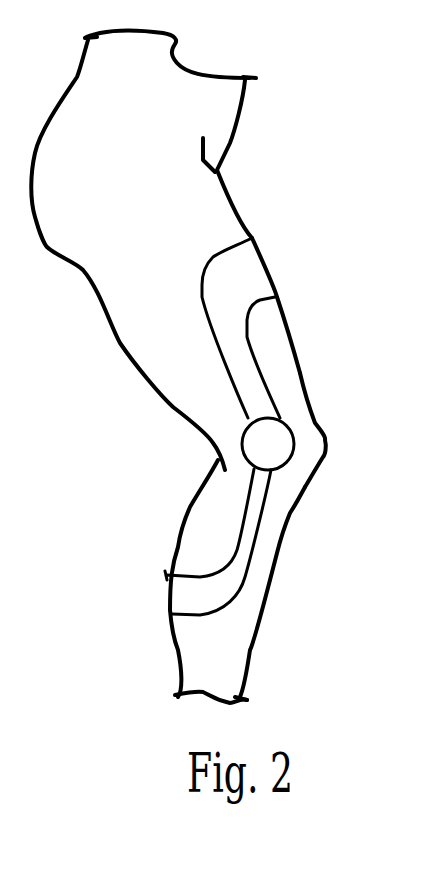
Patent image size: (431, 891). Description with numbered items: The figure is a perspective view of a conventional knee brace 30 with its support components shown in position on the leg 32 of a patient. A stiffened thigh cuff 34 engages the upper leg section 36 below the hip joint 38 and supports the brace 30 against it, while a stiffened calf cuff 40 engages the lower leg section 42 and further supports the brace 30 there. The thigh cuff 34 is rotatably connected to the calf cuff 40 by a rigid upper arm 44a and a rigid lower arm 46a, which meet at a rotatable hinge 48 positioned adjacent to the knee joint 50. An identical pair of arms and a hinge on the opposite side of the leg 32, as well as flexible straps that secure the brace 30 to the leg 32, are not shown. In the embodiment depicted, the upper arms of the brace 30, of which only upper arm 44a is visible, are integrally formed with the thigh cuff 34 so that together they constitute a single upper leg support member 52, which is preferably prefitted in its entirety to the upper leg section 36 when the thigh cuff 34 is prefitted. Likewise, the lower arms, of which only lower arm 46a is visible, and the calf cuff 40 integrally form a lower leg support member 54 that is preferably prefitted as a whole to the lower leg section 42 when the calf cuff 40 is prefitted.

The knee brace 30 is at (234, 411).
The leg 32 is at (130, 305).
The thigh cuff 34 is at (218, 326).
The upper leg section 36 is at (273, 323).
The hip joint 38 is at (160, 145).
The calf cuff 40 is at (209, 543).
The lower leg section 42 is at (265, 553).
The upper arm 44a is at (243, 383).
The lower arm 46a is at (242, 517).
The hinge 48 is at (278, 433).
The knee joint 50 is at (315, 445).
The upper leg support member 52 is at (240, 300).
The lower leg support member 54 is at (232, 580).